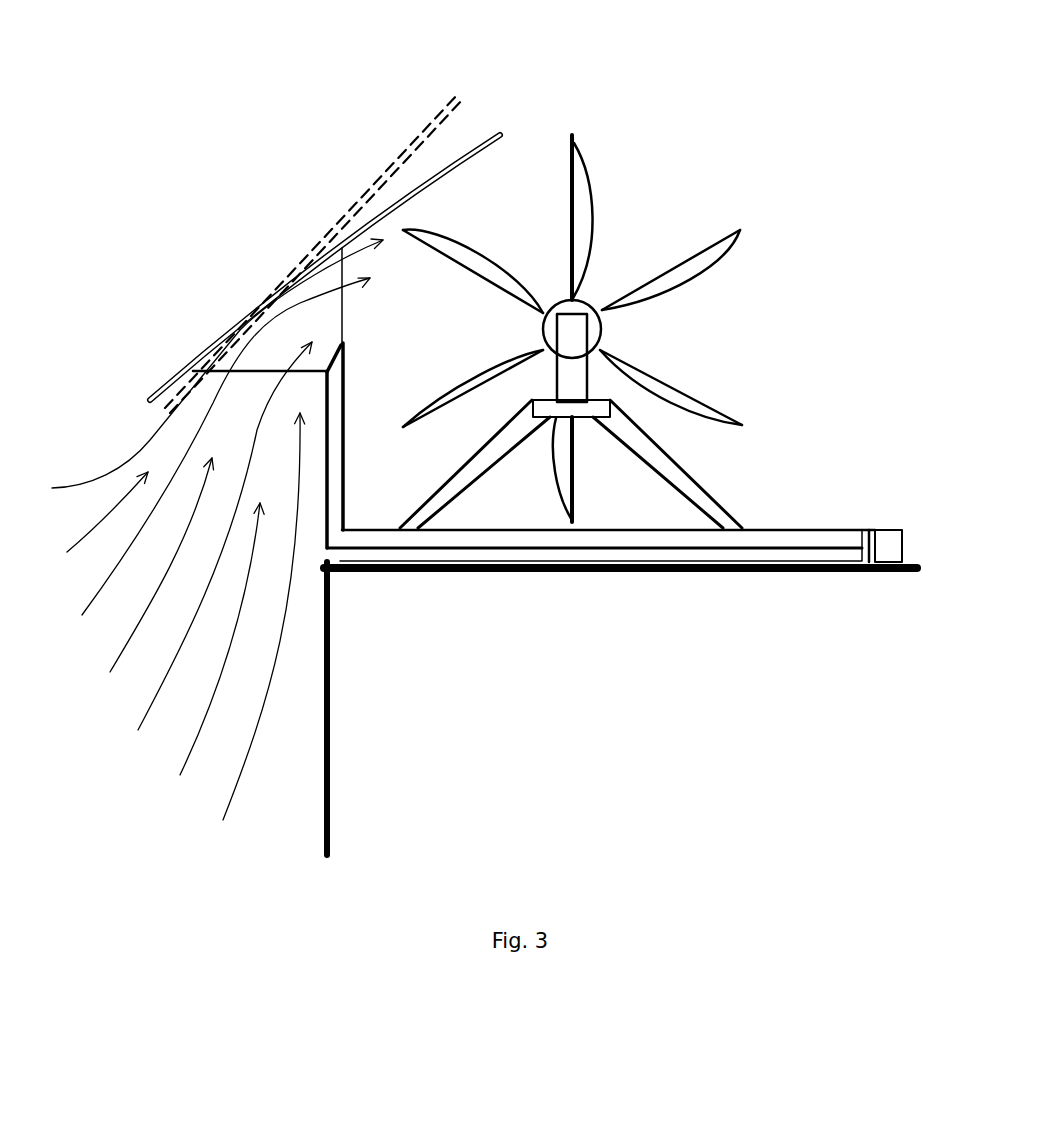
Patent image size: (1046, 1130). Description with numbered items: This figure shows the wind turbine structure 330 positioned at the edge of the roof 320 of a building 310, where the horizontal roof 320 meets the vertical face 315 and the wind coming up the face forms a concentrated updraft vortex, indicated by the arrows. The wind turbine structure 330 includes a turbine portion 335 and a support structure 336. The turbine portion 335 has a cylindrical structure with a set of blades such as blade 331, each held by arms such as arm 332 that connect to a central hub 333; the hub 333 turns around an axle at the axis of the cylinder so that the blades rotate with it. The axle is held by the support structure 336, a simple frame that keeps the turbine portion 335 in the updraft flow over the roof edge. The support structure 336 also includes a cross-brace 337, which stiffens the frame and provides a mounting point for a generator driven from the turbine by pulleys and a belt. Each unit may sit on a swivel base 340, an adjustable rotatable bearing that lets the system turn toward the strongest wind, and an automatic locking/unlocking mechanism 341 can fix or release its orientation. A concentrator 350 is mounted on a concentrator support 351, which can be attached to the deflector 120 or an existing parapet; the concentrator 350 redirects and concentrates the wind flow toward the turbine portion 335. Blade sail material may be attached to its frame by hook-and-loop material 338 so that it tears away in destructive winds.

The deflector 120 is at (350, 387).
The building 310 is at (452, 703).
The vertical face 315 is at (333, 791).
The roof 320 is at (333, 573).
The wind turbine structure 330 is at (717, 613).
The blade 331 is at (586, 158).
The arm 332 is at (568, 170).
The central hub 333 is at (587, 297).
The turbine portion 335 is at (617, 338).
The support structure 336 is at (698, 500).
The cross-brace 337 is at (543, 420).
The hook-and-loop material 338 is at (722, 234).
The swivel base 340 is at (838, 557).
The automatic locking/unlocking mechanism 341 is at (882, 528).
The concentrator 350 is at (170, 378).
The concentrator support 351 is at (250, 370).